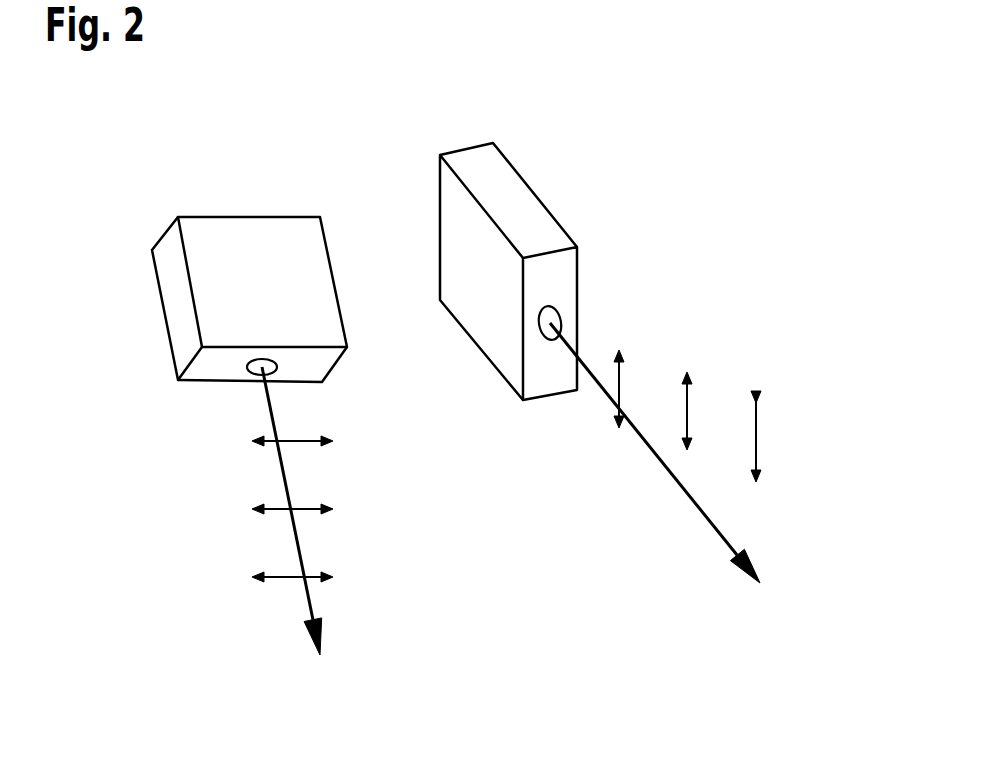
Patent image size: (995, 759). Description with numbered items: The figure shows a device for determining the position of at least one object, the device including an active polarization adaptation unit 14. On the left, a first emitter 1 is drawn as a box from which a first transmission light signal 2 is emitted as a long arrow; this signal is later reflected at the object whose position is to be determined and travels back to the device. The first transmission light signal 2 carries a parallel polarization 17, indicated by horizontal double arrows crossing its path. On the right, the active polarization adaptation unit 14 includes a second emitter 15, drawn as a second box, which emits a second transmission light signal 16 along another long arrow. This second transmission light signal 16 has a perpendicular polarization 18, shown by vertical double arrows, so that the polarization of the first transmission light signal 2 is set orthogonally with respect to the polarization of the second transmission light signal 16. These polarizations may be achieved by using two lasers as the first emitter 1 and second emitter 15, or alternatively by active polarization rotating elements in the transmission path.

The first emitter 1 is at (260, 217).
The first transmission light signal 2 is at (311, 608).
The active polarization adaptation unit 14 is at (533, 210).
The second emitter 15 is at (552, 207).
The second transmission light signal 16 is at (692, 505).
The parallel polarization 17 is at (295, 441).
The perpendicular polarization 18 is at (620, 387).